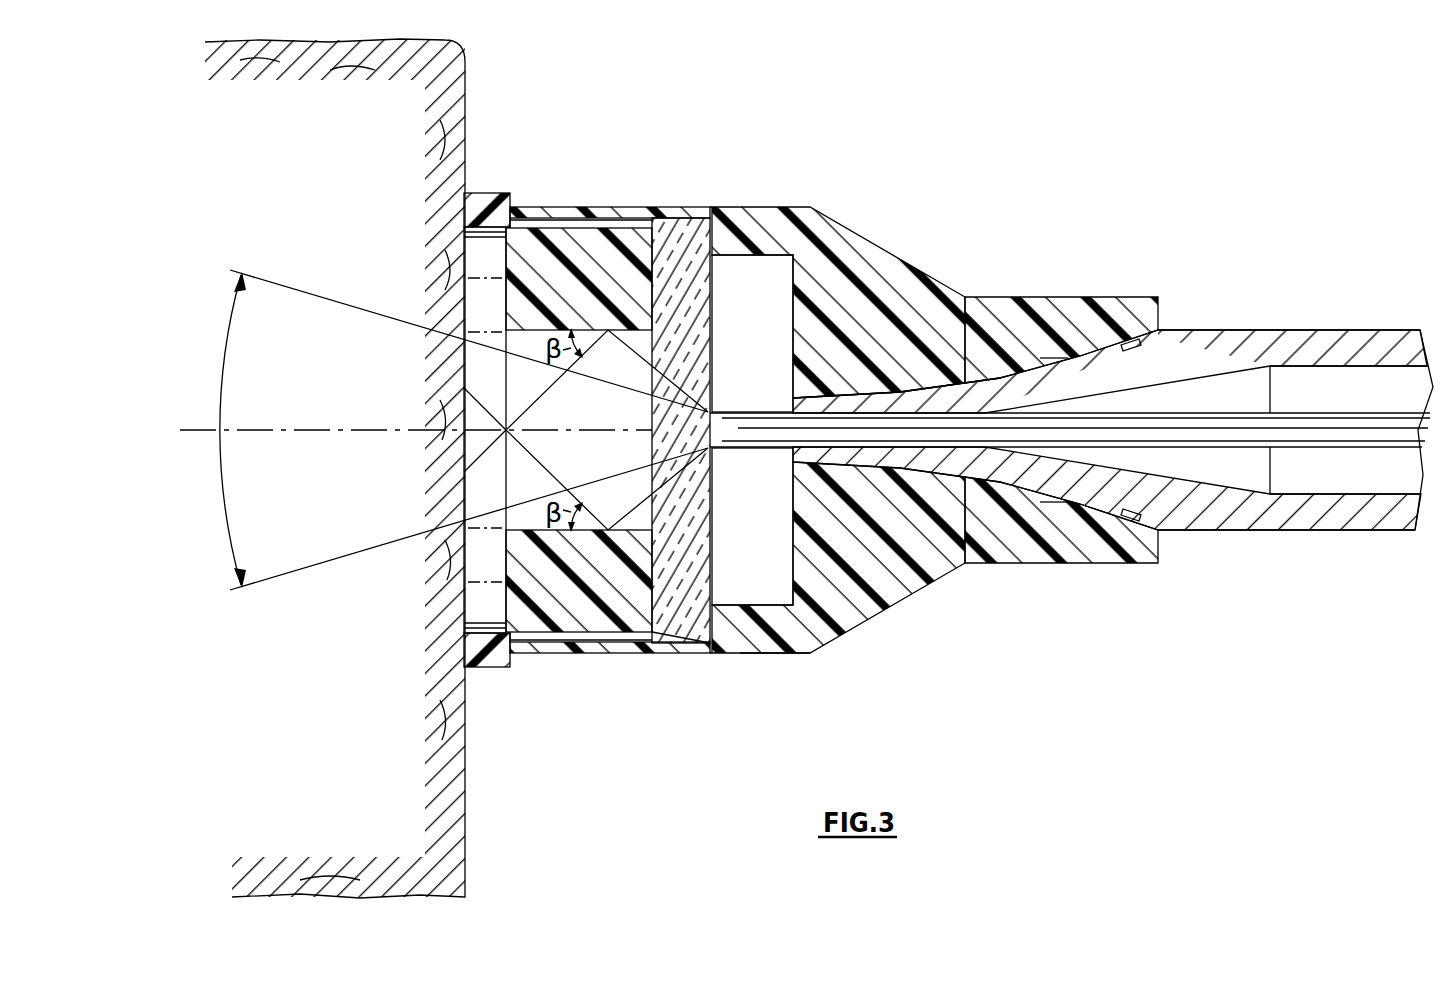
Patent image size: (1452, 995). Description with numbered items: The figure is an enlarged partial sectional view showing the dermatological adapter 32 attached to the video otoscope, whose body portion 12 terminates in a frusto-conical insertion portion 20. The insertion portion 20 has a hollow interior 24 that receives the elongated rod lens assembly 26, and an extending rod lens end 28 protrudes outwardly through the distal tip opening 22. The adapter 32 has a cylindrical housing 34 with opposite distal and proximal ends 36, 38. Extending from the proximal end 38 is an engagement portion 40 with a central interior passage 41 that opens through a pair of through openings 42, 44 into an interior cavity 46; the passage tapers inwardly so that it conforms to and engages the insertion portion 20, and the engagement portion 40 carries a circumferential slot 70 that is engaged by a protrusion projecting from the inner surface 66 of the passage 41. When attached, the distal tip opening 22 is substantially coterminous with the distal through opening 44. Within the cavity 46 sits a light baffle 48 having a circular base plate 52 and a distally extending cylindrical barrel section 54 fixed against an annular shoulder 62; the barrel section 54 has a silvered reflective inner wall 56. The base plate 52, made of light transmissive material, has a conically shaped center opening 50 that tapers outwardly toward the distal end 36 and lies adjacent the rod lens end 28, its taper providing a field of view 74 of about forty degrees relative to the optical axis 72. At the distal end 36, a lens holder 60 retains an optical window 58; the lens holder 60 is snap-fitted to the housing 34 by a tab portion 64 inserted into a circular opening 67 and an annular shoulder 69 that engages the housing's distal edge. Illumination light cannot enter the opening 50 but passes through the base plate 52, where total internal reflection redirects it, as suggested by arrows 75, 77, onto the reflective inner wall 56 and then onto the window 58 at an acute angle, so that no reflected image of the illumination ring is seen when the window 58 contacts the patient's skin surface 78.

The body portion 12 is at (1295, 520).
The frusto-conical insertion portion 20 is at (945, 402).
The distal tip opening 22 is at (790, 450).
The hollow interior 24 is at (1345, 385).
The rod lens assembly 26 is at (1248, 426).
The rod lens end 28 is at (738, 403).
The dermatological adapter 32 is at (765, 656).
The cylindrical housing 34 is at (738, 207).
The distal end 36 is at (535, 206).
The proximal end 38 is at (1152, 566).
The engagement portion 40 is at (1048, 307).
The central interior passage 41 is at (1163, 534).
The through opening 42 is at (1168, 332).
The distal through opening 44 is at (792, 460).
The interior cavity 46 is at (775, 295).
The light baffle 48 is at (658, 225).
The conically shaped center opening 50 is at (688, 322).
The circular base plate 52 is at (668, 646).
The cylindrical barrel section 54 is at (578, 245).
The reflective inner wall 56 is at (527, 330).
The optical window 58 is at (470, 600).
The lens holder 60 is at (486, 192).
The annular shoulder 62 is at (722, 656).
The tab portion 64 is at (558, 219).
The inner surface 66 is at (922, 393).
The circular opening 67 is at (519, 655).
The annular shoulder 69 is at (508, 666).
The circumferential slot 70 is at (1133, 345).
The optical axis 72 is at (305, 430).
The field of view 74 is at (227, 527).
The arrow 75 is at (428, 346).
The arrow 77 is at (424, 510).
The skin surface 78 is at (470, 625).